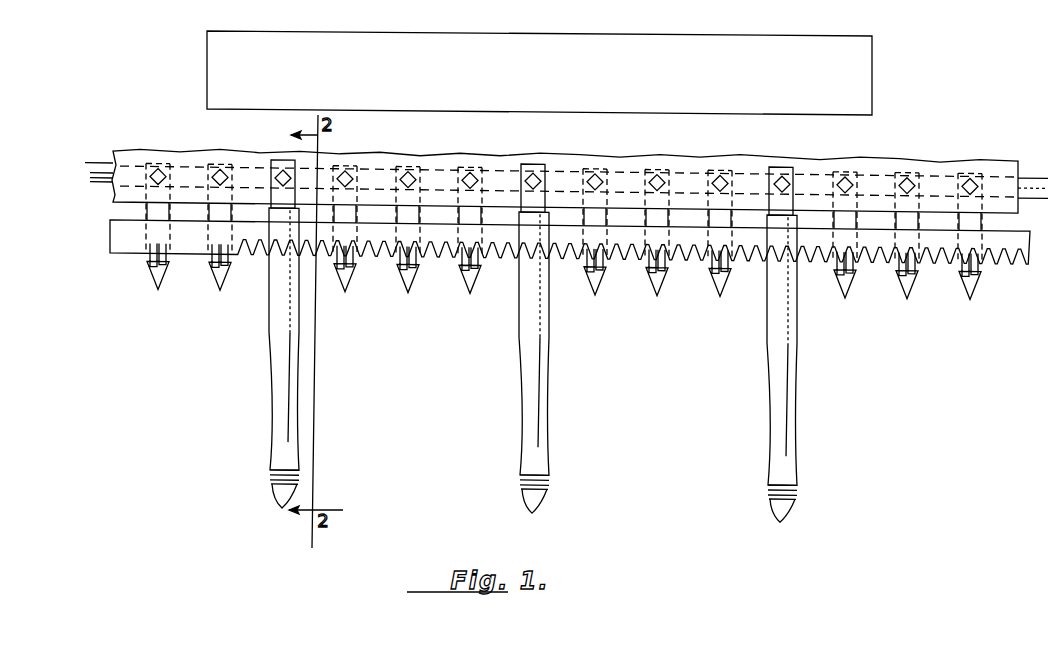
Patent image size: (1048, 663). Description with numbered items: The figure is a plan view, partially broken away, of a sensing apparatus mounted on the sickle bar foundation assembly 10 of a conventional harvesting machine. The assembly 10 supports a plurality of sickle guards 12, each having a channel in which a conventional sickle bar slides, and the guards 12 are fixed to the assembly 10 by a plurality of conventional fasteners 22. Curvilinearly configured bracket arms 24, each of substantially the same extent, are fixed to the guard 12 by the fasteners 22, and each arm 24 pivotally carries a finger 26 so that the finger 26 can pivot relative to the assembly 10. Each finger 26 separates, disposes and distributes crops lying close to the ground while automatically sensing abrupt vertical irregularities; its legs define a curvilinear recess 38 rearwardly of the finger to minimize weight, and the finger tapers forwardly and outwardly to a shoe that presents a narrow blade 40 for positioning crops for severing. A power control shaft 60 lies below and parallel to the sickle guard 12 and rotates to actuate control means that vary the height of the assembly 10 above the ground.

The sickle bar foundation assembly 10 is at (952, 160).
The sickle guard 12 is at (222, 273).
The fasteners 22 is at (169, 167).
The bracket arms 24 is at (283, 198).
The finger 26 is at (300, 422).
The recess 38 is at (271, 471).
The blade 40 is at (280, 493).
The power control shaft 60 is at (108, 173).